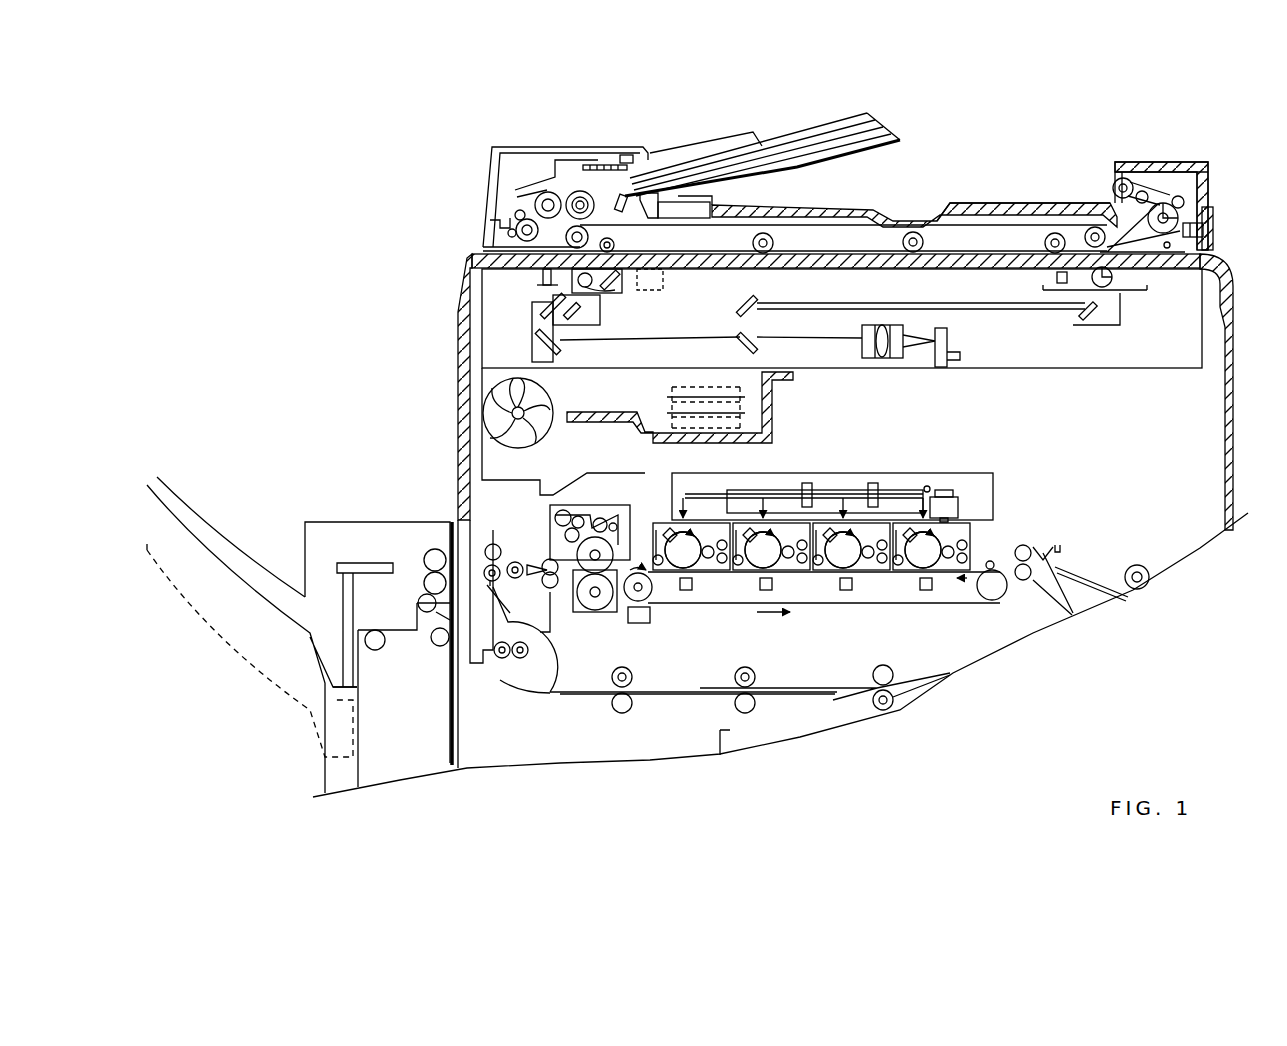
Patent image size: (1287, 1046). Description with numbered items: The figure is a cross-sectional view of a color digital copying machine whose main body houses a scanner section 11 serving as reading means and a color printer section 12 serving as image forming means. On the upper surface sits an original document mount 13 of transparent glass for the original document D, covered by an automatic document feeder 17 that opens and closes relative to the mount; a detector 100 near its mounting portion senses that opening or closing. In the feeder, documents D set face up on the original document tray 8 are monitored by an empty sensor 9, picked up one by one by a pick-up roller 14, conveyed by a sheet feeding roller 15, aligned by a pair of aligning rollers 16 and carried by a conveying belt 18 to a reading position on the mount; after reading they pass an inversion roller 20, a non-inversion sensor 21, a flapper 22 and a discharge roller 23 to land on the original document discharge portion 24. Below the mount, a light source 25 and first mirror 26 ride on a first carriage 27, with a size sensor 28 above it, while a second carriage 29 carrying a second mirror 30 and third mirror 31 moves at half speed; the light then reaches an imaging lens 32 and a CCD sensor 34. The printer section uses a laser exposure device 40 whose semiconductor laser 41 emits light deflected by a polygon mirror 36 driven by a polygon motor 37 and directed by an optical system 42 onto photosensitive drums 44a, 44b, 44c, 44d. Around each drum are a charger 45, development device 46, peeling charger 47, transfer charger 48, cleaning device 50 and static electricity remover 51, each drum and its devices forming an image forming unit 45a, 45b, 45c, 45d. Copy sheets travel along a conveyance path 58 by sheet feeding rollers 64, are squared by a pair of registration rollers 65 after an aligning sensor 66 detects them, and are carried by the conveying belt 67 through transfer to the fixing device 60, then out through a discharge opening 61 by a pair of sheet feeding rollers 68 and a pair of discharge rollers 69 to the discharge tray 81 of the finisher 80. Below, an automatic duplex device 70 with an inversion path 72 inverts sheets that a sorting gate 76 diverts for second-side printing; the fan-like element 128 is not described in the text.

The original document tray 8 is at (731, 180).
The empty sensor 9 is at (627, 152).
The scanner section 11 is at (840, 305).
The color printer section 12 is at (1213, 417).
The original document mount 13 is at (985, 253).
The pick-up roller 14 is at (578, 190).
The sheet feeding roller 15 is at (537, 203).
The pair of aligning rollers 16 is at (508, 233).
The automatic document feeder 17 is at (678, 143).
The conveying belt 18 is at (875, 210).
The inversion roller 20 is at (1205, 221).
The non-inversion sensor 21 is at (1214, 240).
The flapper 22 is at (1155, 200).
The discharge roller 23 is at (1112, 186).
The original document discharge portion 24 is at (917, 212).
The light source 25 is at (628, 296).
The first mirror 26 is at (585, 315).
The first carriage 27 is at (575, 335).
The size sensor 28 is at (540, 282).
The second carriage 29 is at (535, 345).
The second mirror 30 is at (540, 317).
The third mirror 31 is at (560, 362).
The imaging lens 32 is at (893, 325).
The CCD sensor 34 is at (950, 340).
The polygon mirror 36 is at (993, 485).
The polygon motor 37 is at (993, 512).
The laser exposure device 40 is at (987, 450).
The semiconductor laser 41 is at (940, 478).
The optical system 42 is at (872, 467).
The photosensitive drum 44a is at (933, 565).
The photosensitive drum 44b is at (850, 575).
The photosensitive drum 44c is at (773, 575).
The photosensitive drum 44d is at (693, 567).
The charger 45 is at (673, 528).
The image forming unit 45a is at (937, 567).
The image forming unit 45b is at (890, 570).
The image forming unit 45c is at (792, 567).
The image forming unit 45d is at (692, 562).
The development device 46 is at (710, 563).
The peeling charger 47 is at (680, 585).
The transfer charger 48 is at (683, 593).
The cleaning device 50 is at (660, 552).
The static electricity remover 51 is at (655, 540).
The conveyance path 58 is at (1065, 565).
The fixing device 60 is at (580, 503).
The discharge opening 61 is at (452, 520).
The sheet feeding rollers 64 is at (1138, 563).
The pair of registration rollers 65 is at (1027, 546).
The aligning sensor 66 is at (1047, 553).
The conveying belt 67 is at (740, 604).
The pair of sheet feeding rollers 68 is at (552, 624).
The pair of discharge rollers 69 is at (493, 545).
The automatic duplex device 70 is at (562, 703).
The inversion path 72 is at (592, 696).
The sorting gate 76 is at (517, 562).
The finisher 80 is at (305, 563).
The discharge tray 81 is at (193, 518).
The detector 100 is at (665, 284).
The cooling fan 128 is at (547, 432).
The original document D is at (840, 120).